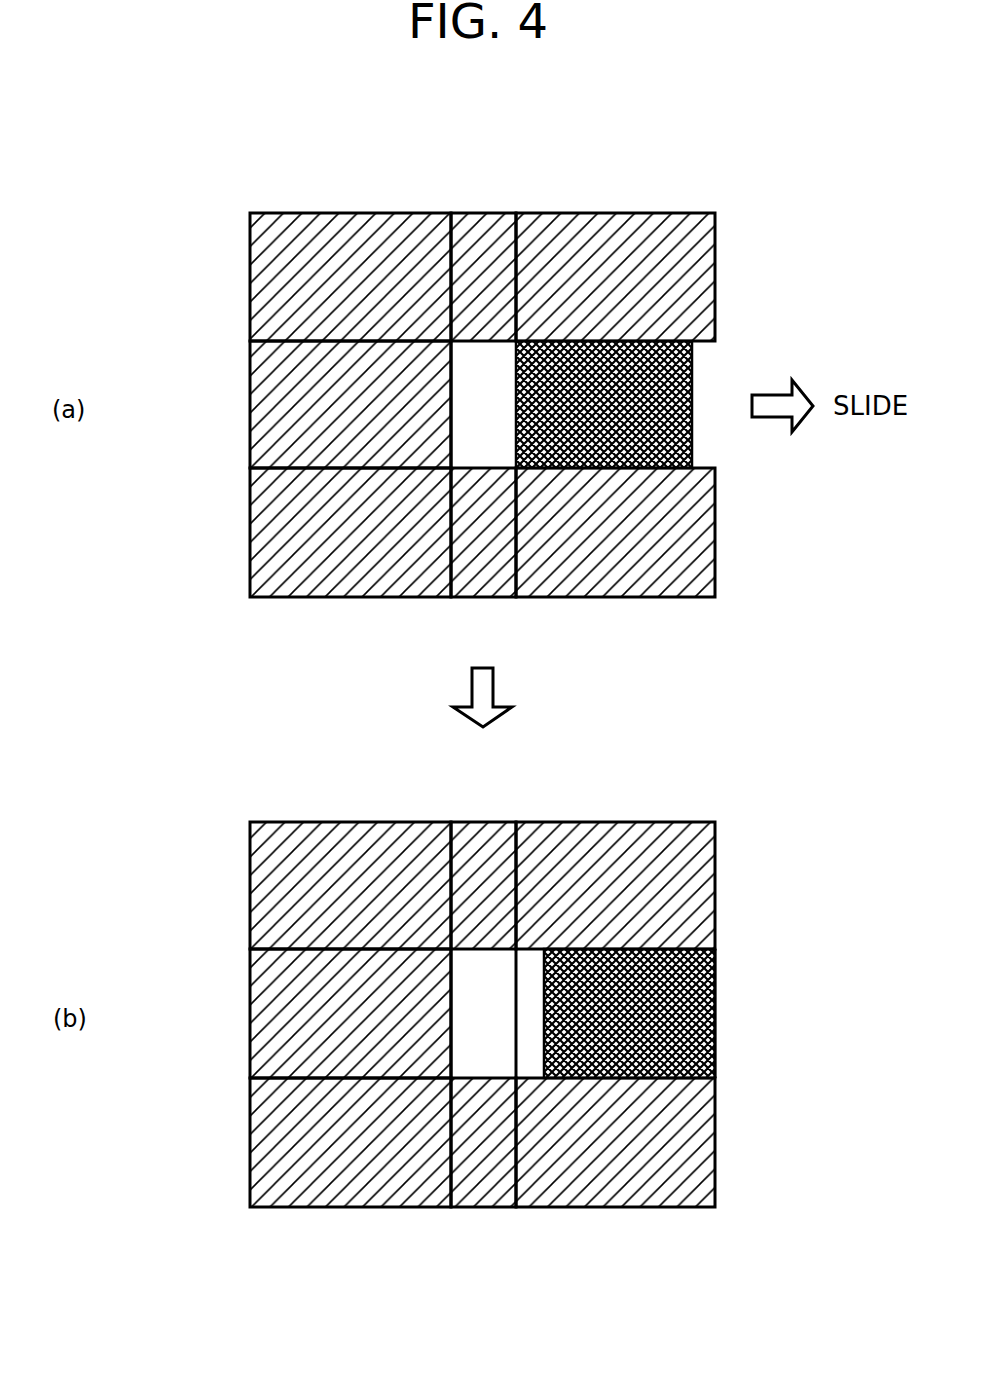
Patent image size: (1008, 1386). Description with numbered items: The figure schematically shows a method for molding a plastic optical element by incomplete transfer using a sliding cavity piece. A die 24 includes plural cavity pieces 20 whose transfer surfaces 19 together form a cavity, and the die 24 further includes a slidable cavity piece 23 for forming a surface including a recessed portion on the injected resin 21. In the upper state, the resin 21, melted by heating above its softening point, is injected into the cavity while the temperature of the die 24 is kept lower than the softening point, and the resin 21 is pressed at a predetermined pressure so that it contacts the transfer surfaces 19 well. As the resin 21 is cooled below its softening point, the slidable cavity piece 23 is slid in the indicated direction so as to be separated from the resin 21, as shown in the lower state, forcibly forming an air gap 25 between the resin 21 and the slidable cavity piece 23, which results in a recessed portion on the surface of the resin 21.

The transfer surfaces 19 is at (480, 340).
The cavity pieces 20 is at (250, 258).
The resin 21 is at (470, 960).
The slidable cavity piece 23 is at (651, 358).
The die 24 is at (444, 360).
The air gap 25 is at (530, 960).